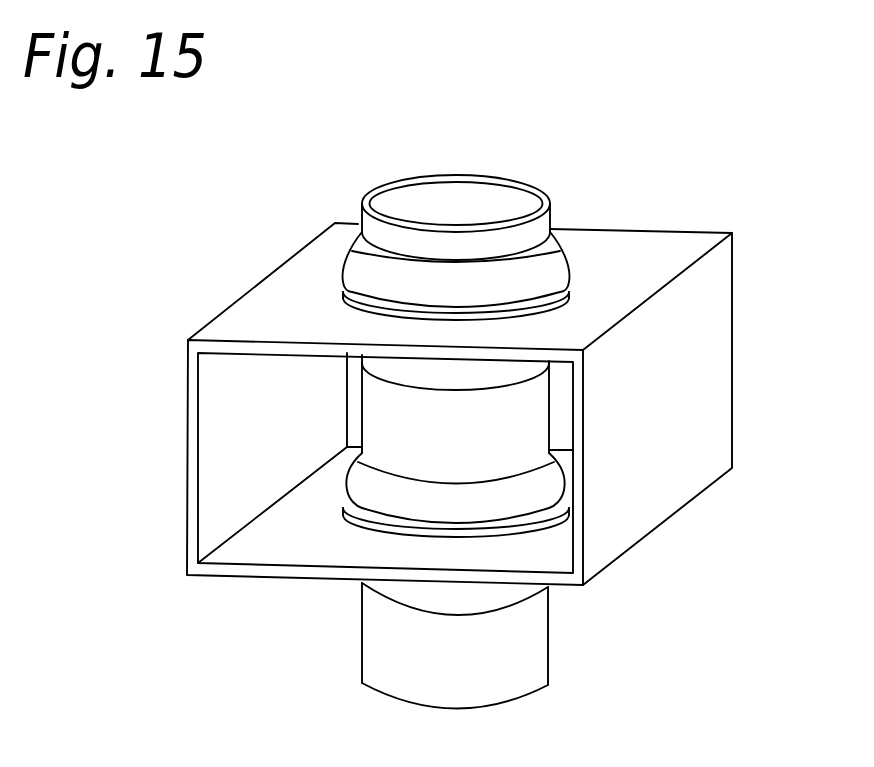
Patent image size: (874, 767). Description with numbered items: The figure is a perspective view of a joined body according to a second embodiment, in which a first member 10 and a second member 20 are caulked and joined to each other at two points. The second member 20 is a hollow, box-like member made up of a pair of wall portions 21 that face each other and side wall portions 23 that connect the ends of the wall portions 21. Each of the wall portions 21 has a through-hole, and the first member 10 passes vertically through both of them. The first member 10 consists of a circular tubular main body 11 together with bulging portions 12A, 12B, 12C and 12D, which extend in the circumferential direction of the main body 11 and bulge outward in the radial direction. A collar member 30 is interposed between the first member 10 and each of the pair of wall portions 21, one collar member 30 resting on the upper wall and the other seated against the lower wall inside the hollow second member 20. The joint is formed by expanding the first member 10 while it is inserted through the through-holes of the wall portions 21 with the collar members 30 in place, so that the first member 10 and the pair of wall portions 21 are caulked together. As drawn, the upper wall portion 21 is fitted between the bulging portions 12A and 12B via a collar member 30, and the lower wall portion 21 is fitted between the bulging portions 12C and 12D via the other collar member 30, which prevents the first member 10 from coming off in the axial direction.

The first member 10 is at (548, 189).
The circular tubular main body 11 is at (451, 409).
The bulging portion 12A is at (360, 255).
The bulging portion 12B is at (397, 377).
The bulging portion 12C is at (543, 483).
The bulging portion 12D is at (510, 595).
The second member 20 is at (458, 397).
The wall portion 21 is at (222, 328).
The side wall portion 23 is at (653, 368).
The collar member 30 is at (574, 284).